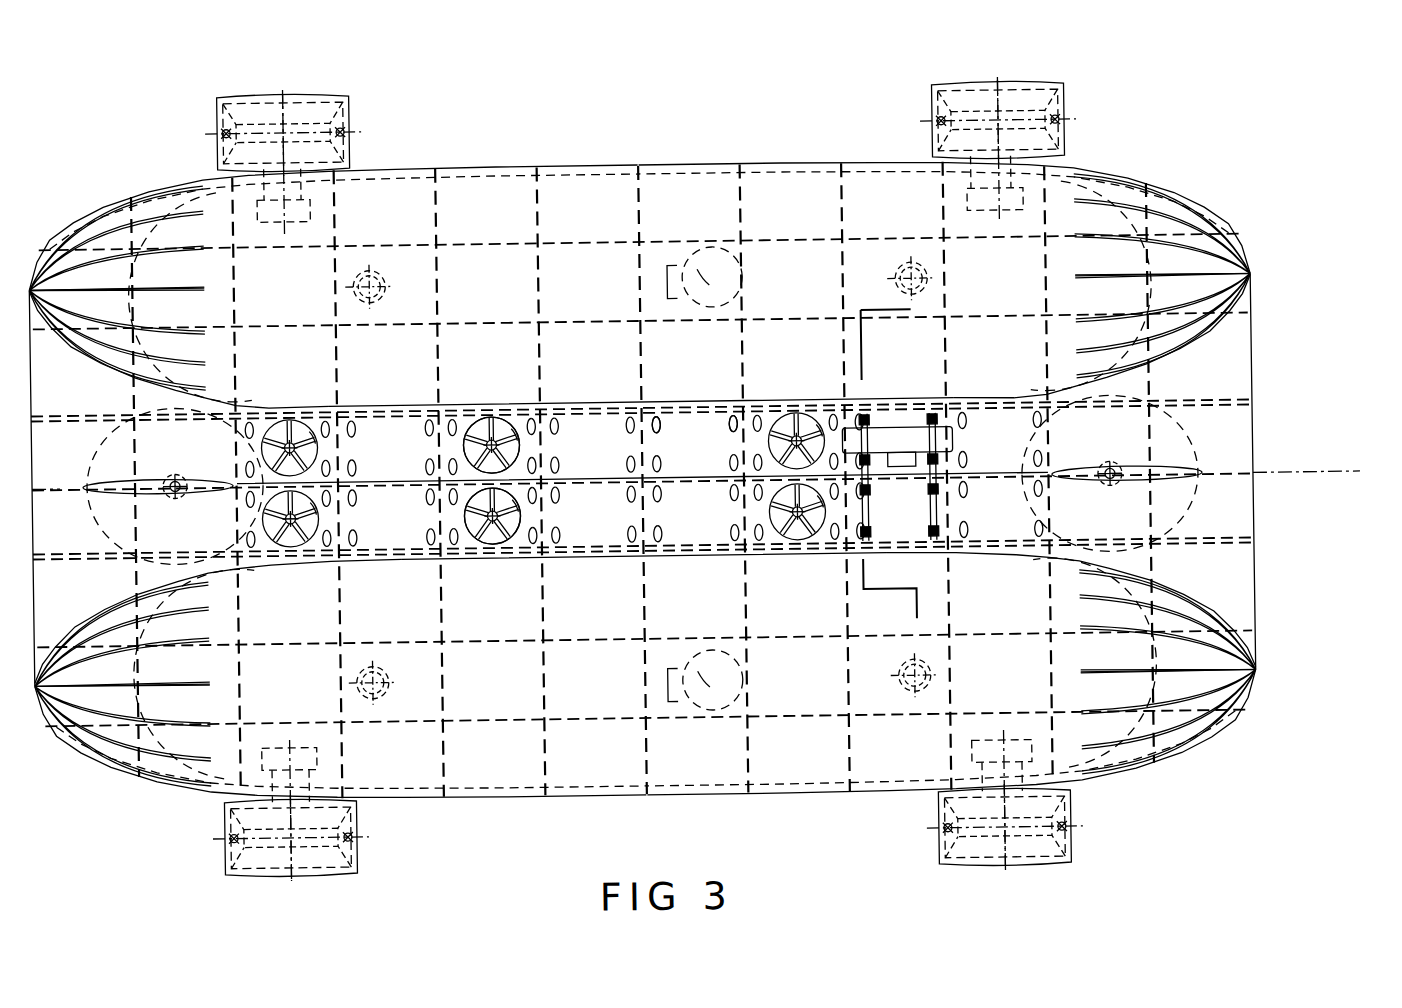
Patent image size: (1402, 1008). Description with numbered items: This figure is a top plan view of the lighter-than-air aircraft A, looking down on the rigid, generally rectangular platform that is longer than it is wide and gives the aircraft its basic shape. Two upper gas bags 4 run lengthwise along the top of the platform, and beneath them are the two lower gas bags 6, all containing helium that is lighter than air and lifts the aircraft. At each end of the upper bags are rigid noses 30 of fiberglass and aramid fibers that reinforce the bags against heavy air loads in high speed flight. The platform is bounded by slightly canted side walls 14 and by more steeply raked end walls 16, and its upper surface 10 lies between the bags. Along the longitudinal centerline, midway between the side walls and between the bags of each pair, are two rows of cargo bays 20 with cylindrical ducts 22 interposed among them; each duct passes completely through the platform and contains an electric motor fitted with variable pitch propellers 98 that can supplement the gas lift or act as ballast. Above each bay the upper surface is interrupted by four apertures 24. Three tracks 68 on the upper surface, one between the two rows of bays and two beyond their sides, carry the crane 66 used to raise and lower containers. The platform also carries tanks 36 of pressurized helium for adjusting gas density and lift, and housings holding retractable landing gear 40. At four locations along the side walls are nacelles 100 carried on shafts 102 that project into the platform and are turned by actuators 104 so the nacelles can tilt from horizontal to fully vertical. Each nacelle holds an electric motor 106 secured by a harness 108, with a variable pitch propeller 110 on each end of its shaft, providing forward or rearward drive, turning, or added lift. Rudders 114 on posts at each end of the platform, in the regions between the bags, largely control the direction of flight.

The upper surface 10 is at (1213, 397).
The side walls 14 is at (630, 162).
The end walls 16 is at (1254, 576).
The cargo bays 20 is at (378, 448).
The cylindrical ducts 22 is at (500, 416).
The apertures 24 is at (732, 430).
The rigid noses 30 is at (82, 233).
The tanks 36 is at (748, 284).
The landing gear 40 is at (400, 277).
The crane 66 is at (878, 425).
The tracks 68 is at (580, 407).
The variable pitch propellers 98 is at (490, 420).
The nacelles 100 is at (244, 92).
The shafts 102 is at (325, 776).
The actuators 104 is at (318, 205).
The electric motor 106 is at (317, 102).
The harness 108 is at (352, 857).
The variable pitch propellers 110 is at (220, 850).
The rudders 114 is at (1170, 478).
The upper gas bags 4 is at (737, 190).
The lower gas bags 6 is at (913, 150).
The lighter-than-air aircraft A is at (1170, 170).